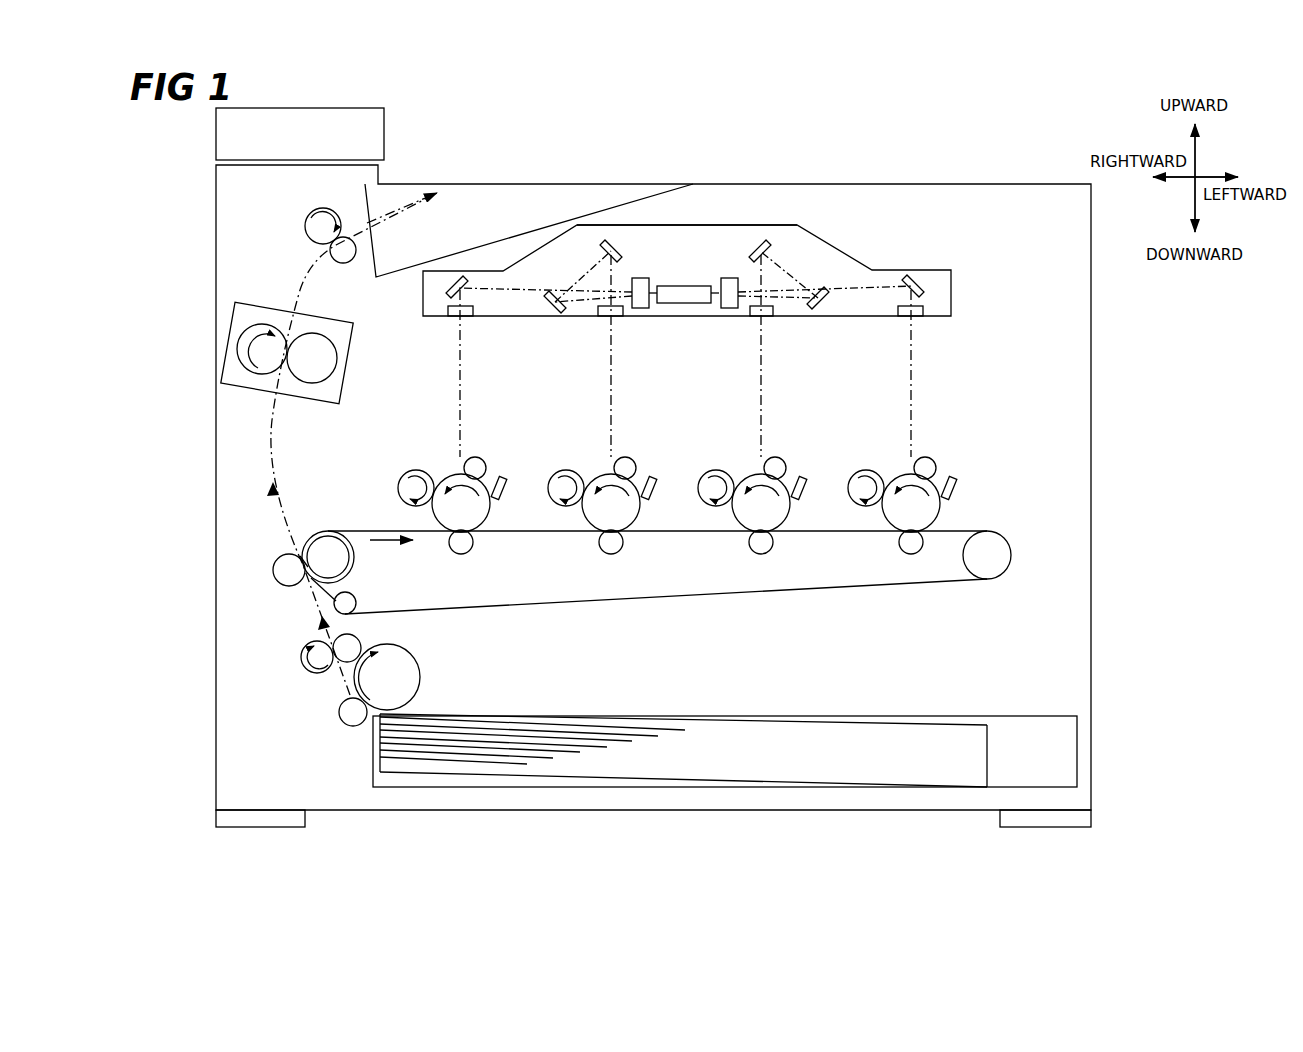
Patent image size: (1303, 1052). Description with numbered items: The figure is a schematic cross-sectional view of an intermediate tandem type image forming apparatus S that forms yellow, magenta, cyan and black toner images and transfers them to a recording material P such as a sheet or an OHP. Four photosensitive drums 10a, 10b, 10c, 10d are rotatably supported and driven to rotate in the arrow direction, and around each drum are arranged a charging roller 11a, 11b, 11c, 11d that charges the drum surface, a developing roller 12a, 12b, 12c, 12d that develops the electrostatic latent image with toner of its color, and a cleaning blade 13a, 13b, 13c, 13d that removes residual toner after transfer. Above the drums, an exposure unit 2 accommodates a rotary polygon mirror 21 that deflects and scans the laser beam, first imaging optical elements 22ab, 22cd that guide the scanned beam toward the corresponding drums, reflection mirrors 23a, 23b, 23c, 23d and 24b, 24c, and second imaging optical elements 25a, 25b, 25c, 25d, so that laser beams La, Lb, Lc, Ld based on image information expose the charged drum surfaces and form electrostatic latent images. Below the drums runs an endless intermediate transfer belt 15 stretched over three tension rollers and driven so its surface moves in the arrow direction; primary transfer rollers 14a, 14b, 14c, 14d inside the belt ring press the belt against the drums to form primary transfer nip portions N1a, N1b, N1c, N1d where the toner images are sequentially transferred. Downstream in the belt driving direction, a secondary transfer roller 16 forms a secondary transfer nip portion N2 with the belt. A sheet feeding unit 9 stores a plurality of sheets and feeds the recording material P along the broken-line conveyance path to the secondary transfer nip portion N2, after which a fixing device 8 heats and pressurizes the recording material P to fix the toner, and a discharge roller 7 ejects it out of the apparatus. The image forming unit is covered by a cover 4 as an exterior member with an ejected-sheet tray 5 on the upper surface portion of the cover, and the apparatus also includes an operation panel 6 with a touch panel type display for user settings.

The exposure unit 2 is at (752, 225).
The cover 4 is at (1025, 184).
The ejected-sheet tray 5 is at (512, 228).
The operation panel 6 is at (253, 143).
The discharge roller 7 is at (313, 230).
The fixing device 8 is at (238, 313).
The sheet feeding unit 9 is at (890, 716).
The photosensitive drum 10a is at (461, 503).
The photosensitive drum 10b is at (611, 503).
The photosensitive drum 10c is at (761, 503).
The photosensitive drum 10d is at (911, 503).
The charging roller 11a is at (473, 459).
The charging roller 11b is at (623, 459).
The charging roller 11c is at (773, 459).
The charging roller 11d is at (923, 459).
The developing roller 12a is at (411, 480).
The developing roller 12b is at (561, 480).
The developing roller 12c is at (711, 480).
The developing roller 12d is at (861, 480).
The cleaning blade 13a is at (502, 493).
The cleaning blade 13b is at (652, 493).
The cleaning blade 13c is at (802, 493).
The cleaning blade 13d is at (952, 493).
The primary transfer roller 14a is at (464, 554).
The primary transfer roller 14b is at (618, 554).
The primary transfer roller 14c is at (765, 554).
The primary transfer roller 14d is at (915, 554).
The intermediate transfer belt 15 is at (712, 596).
The secondary transfer roller 16 is at (278, 573).
The rotary polygon mirror 21 is at (683, 303).
The first imaging optical element 22ab is at (640, 278).
The first imaging optical element 22cd is at (730, 278).
The reflection mirror 23a is at (455, 278).
The reflection mirror 23b is at (555, 313).
The reflection mirror 23c is at (818, 310).
The reflection mirror 23d is at (921, 280).
The reflection mirror 24b is at (608, 243).
The reflection mirror 24c is at (760, 243).
The second imaging optical element 25a is at (450, 310).
The second imaging optical element 25b is at (598, 312).
The second imaging optical element 25c is at (752, 312).
The second imaging optical element 25d is at (900, 312).
The laser beam La is at (463, 380).
The laser beam Lb is at (614, 370).
The laser beam Lc is at (764, 382).
The laser beam Ld is at (914, 365).
The primary transfer nip portion N1a is at (451, 540).
The primary transfer nip portion N1b is at (601, 540).
The primary transfer nip portion N1c is at (751, 540).
The primary transfer nip portion N1d is at (901, 540).
The secondary transfer nip portion N2 is at (305, 567).
The recording material P is at (545, 717).
The image forming apparatus S is at (852, 207).